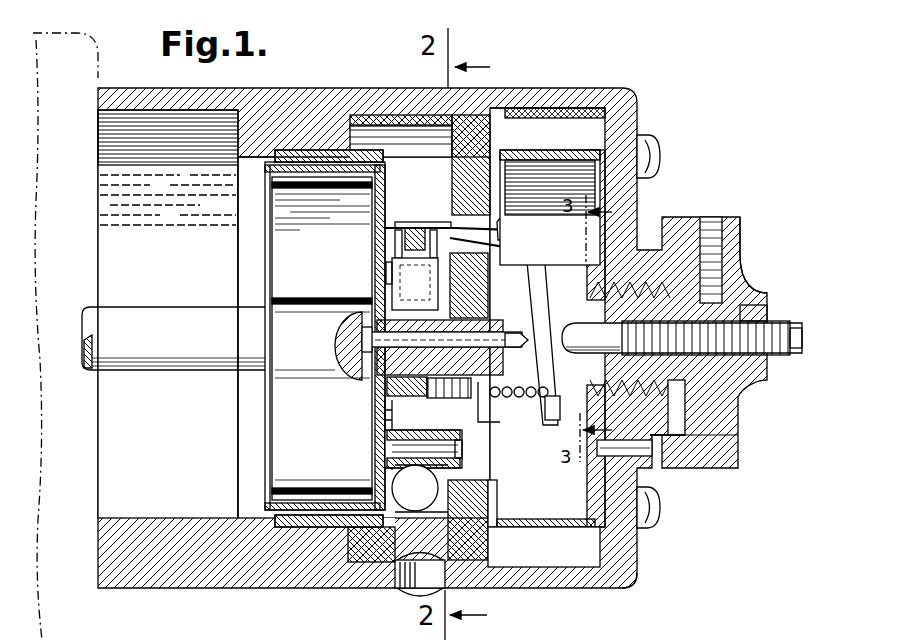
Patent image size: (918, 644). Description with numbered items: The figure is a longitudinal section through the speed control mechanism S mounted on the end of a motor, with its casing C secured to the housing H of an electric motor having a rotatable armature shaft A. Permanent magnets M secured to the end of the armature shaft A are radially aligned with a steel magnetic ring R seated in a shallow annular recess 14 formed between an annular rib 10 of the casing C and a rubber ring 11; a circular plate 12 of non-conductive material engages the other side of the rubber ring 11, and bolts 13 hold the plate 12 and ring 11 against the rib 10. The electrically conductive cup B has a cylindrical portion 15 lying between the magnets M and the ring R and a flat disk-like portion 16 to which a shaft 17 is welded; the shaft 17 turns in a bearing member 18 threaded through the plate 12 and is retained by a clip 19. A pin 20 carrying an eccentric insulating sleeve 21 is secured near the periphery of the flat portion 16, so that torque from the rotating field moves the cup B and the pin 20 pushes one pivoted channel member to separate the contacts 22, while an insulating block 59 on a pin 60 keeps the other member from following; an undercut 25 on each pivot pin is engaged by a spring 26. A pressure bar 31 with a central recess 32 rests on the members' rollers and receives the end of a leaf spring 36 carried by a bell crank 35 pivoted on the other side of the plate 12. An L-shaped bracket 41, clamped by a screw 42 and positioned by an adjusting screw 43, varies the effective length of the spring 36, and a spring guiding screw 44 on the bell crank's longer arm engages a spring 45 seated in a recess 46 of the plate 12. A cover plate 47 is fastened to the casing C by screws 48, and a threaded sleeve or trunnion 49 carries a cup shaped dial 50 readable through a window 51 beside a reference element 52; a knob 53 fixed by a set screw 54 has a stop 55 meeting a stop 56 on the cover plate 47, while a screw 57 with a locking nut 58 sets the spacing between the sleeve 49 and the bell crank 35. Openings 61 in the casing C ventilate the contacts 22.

The housing H is at (78, 336).
The annular rib 10 is at (238, 108).
The rubber ring 11 is at (376, 121).
The circular plate 12 is at (490, 553).
The bolts 13 is at (498, 506).
The shallow annular recess 14 is at (310, 528).
The cylindrical portion 15 is at (311, 160).
The flat disk-like portion 16 is at (371, 249).
The shaft 17 is at (346, 345).
The bearing member 18 is at (340, 330).
The clip 19 is at (515, 334).
The pin 20 is at (387, 462).
The insulating sleeve 21 is at (385, 447).
The contacts 22 is at (420, 505).
The undercut portion 25 is at (412, 284).
The spring 26 is at (362, 292).
The pressure bar 31 is at (456, 228).
The central recess 32 is at (378, 232).
The bell crank 35 is at (490, 239).
The leaf spring 36 is at (412, 226).
The L-shaped bracket 41 is at (552, 226).
The screw 42 is at (513, 205).
The adjusting screw 43 is at (563, 256).
The spring guiding screw 44 is at (553, 421).
The spring 45 is at (525, 400).
The shallow recess 46 is at (490, 432).
The cover plate 47 is at (630, 580).
The screws 48 is at (650, 530).
The sleeve or trunnion 49 is at (748, 397).
The cup shaped dial 50 is at (566, 160).
The window 51 is at (584, 106).
The reference line or element 52 is at (555, 112).
The knob 53 is at (746, 276).
The set screw 54 is at (724, 250).
The stop 55 is at (662, 470).
The stop 56 is at (640, 458).
The screw 57 is at (782, 326).
The locking nut 58 is at (760, 306).
The insulating block 59 is at (386, 394).
The pin 60 is at (388, 404).
The openings 61 is at (410, 592).
The armature shaft A is at (122, 316).
The cup B is at (287, 175).
The casing C is at (344, 104).
The permanent magnets M is at (262, 256).
The magnetic ring R is at (286, 152).
The speed control mechanism S is at (665, 206).